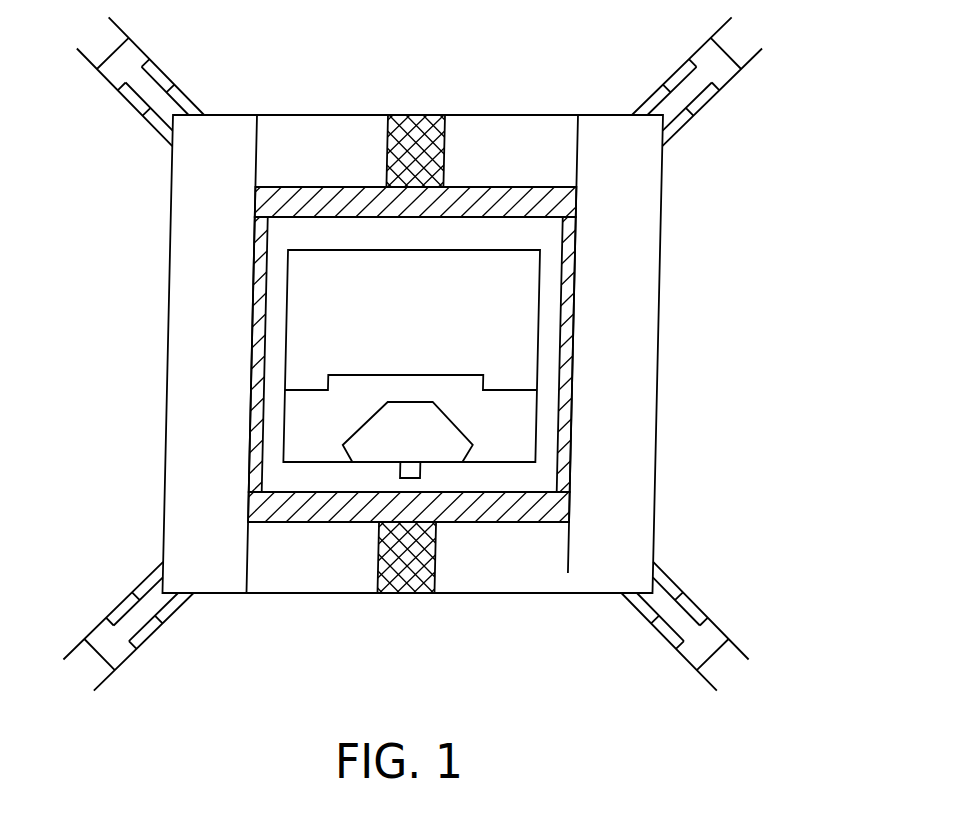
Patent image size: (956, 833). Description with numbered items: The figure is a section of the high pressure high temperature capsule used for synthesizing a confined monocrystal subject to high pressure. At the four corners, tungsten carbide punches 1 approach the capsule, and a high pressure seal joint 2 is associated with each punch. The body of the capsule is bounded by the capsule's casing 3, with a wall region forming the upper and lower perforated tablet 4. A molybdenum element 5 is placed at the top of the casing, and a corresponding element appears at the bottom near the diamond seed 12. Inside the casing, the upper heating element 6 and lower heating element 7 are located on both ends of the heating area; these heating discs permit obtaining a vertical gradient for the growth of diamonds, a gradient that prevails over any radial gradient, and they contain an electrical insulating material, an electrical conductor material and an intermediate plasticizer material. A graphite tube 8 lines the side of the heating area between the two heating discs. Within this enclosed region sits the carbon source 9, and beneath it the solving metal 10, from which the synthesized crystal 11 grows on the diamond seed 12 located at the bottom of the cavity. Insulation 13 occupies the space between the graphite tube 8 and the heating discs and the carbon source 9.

The tungsten carbide punch 1 is at (343, 95).
The high pressure seal joint 2 is at (692, 87).
The capsule's casing 3 is at (627, 273).
The upper and lower perforated tablet 4 is at (480, 567).
The molybdenum element 5 is at (422, 143).
The upper heating element 6 is at (280, 203).
The lower heating element 7 is at (263, 507).
The graphite tube 8 is at (262, 353).
The carbon source 9 is at (510, 350).
The solving metal 10 is at (510, 427).
The synthesized crystal 11 is at (380, 442).
The diamond seed 12 is at (410, 478).
The insulation 13 is at (538, 237).